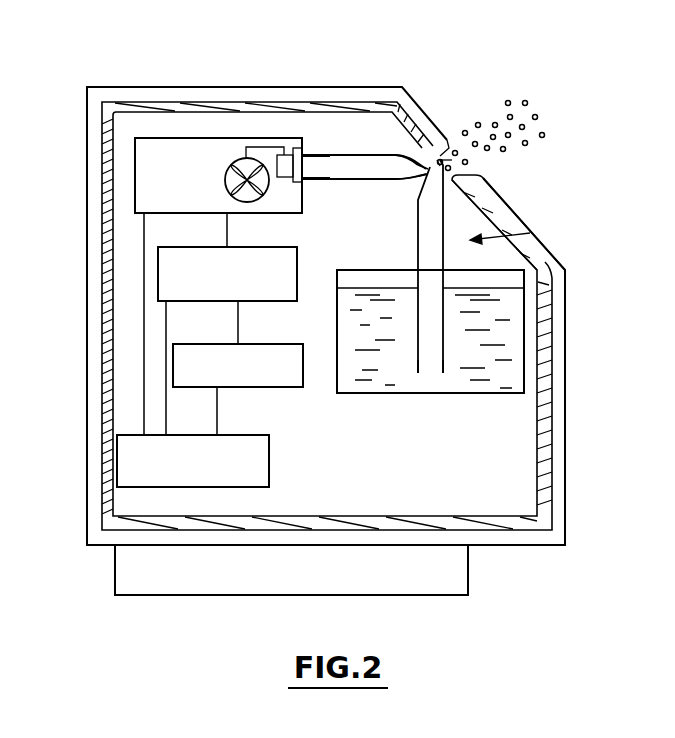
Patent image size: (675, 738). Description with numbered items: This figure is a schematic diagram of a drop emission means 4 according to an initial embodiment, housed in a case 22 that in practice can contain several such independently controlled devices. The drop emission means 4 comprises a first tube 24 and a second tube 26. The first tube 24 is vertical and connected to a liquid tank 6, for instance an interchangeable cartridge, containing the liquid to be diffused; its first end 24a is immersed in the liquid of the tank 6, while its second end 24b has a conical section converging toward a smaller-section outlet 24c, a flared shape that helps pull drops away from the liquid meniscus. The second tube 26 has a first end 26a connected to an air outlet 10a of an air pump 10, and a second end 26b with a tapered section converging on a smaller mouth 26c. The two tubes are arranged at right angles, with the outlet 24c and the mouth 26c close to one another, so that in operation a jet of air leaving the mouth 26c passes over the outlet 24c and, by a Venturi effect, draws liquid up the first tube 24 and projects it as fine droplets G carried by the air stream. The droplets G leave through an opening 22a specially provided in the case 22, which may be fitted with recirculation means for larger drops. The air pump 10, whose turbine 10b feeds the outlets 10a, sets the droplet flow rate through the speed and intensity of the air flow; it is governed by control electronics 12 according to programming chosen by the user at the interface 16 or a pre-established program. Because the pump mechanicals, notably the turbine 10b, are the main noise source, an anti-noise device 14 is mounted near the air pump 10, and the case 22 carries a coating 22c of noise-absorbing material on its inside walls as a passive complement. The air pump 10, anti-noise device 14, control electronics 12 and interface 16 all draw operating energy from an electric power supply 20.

The drop emission means 4 is at (532, 233).
The liquid tank 6 is at (395, 370).
The air pump 10 is at (135, 194).
The air outlet 10a is at (293, 150).
The turbine 10b is at (224, 170).
The control electronics 12 is at (270, 453).
The anti-noise device 14 is at (290, 380).
The interface 16 is at (435, 564).
The electric power supply 20 is at (162, 274).
The case 22 is at (565, 480).
The opening 22a is at (452, 143).
The coating 22c is at (100, 252).
The first tube 24 is at (418, 250).
The first end 24a is at (437, 357).
The second end 24b is at (480, 212).
The outlet 24c is at (452, 163).
The second tube 26 is at (336, 153).
The first end 26a is at (303, 182).
The second end 26b is at (404, 132).
The mouth 26c is at (426, 145).
The droplets G is at (527, 103).